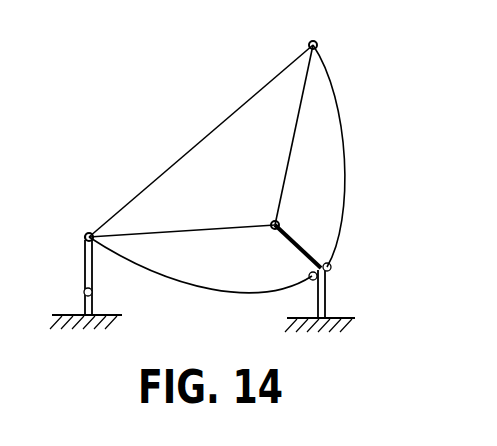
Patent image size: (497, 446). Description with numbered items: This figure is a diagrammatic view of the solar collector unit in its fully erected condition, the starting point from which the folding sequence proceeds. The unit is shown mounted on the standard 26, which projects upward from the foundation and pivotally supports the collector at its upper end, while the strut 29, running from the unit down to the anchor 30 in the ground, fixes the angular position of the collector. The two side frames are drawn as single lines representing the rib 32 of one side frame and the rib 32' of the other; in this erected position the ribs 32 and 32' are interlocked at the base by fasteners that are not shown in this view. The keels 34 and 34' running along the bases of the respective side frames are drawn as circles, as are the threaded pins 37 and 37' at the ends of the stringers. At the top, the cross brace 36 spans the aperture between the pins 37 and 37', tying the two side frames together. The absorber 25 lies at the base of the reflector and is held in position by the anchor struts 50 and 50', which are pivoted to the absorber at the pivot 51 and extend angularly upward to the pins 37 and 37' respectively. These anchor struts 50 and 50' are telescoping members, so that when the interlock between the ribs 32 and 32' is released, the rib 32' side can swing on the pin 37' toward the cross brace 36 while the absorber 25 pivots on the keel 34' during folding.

The absorber element 25 is at (290, 240).
The standard 26 is at (325, 300).
The strut 29 is at (80, 266).
The anchor 30 is at (93, 303).
The rib 32 is at (200, 277).
The rib 32' is at (349, 156).
The keel 34 is at (293, 272).
The keel 34' is at (346, 271).
The cross brace 36 is at (218, 125).
The threaded pin 37 is at (74, 227).
The threaded pin 37' is at (331, 36).
The anchor strut 50 is at (182, 219).
The anchor strut 50' is at (283, 135).
The pivot 51 is at (272, 222).